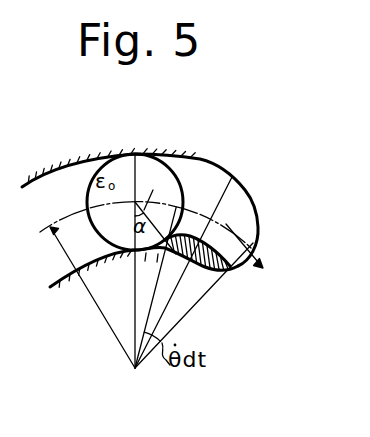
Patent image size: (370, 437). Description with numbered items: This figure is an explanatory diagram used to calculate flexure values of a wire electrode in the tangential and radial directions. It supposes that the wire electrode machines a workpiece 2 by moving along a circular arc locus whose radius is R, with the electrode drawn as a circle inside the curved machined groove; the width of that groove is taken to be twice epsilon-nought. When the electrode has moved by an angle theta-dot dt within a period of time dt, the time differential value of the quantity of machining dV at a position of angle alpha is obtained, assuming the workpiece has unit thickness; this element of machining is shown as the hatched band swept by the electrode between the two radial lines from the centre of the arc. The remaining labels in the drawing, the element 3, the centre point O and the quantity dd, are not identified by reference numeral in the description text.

The workpiece 2 is at (60, 283).
The upper wall of channel 3 is at (67, 168).
The ball centre O is at (135, 204).
The time differential value of the quantity of machining dV is at (247, 241).
The radius of the circular arc locus R is at (145, 285).
The diameter element dd is at (155, 189).